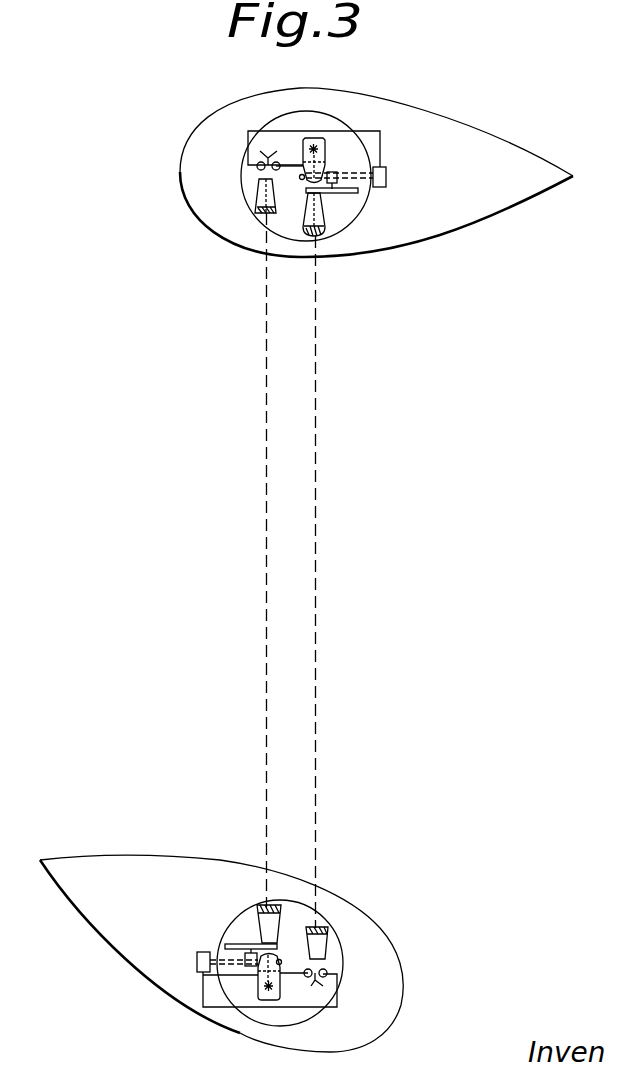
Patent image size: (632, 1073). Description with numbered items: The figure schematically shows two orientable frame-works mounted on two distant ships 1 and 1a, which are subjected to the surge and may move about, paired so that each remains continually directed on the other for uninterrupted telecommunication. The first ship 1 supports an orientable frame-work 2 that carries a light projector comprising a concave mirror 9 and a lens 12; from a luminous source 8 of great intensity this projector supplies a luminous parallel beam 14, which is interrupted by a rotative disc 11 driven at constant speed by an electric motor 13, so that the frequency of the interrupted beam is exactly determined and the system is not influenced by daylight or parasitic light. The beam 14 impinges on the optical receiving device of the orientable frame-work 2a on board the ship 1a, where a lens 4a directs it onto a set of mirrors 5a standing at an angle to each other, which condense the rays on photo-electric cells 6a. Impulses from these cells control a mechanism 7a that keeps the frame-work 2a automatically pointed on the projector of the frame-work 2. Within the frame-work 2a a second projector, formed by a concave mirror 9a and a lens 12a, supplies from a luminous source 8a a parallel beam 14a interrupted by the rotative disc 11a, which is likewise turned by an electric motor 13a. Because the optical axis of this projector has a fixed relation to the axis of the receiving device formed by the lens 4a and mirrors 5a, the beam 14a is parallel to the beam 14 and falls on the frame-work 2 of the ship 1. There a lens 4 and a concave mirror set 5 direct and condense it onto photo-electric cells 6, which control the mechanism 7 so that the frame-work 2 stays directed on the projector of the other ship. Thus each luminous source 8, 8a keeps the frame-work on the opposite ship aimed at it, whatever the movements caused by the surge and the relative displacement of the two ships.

The ship 1 is at (130, 857).
The ship 1a is at (487, 211).
The orientable frame-work 2 is at (290, 903).
The orientable frame-work 2a is at (292, 121).
The lens 4 is at (320, 927).
The lens 4a is at (258, 204).
The set of mirrors 5 is at (316, 985).
The set of mirrors 5a is at (267, 150).
The photo-electric cells 6 is at (311, 971).
The photo-electric cells 6a is at (261, 168).
The mechanism 7 is at (203, 951).
The mechanism 7a is at (387, 173).
The luminous source 8 is at (272, 987).
The luminous source 8a is at (317, 150).
The concave mirror 9 is at (262, 993).
The concave mirror 9a is at (318, 137).
The rotative disc 11 is at (252, 934).
The rotative disc 11a is at (356, 194).
The lens 12 is at (265, 904).
The lens 12a is at (323, 237).
The electric motor 13 is at (250, 967).
The electric motor 13a is at (340, 179).
The luminous parallel beam 14 is at (267, 558).
The parallel beam 14a is at (316, 418).